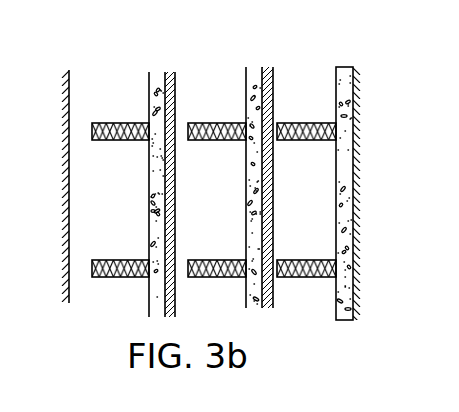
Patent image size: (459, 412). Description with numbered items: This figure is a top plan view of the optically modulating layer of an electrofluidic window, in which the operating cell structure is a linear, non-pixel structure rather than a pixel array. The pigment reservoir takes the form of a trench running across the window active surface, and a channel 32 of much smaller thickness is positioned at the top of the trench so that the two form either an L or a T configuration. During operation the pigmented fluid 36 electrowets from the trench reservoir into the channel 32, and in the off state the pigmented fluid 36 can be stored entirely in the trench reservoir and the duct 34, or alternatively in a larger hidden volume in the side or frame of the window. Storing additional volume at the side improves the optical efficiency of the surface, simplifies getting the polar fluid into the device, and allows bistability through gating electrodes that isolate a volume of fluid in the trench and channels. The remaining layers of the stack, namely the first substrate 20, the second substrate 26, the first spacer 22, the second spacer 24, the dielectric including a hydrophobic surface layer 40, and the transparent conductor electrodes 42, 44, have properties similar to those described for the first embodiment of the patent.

The first substrate 20 is at (240, 187).
The first spacer 22 is at (240, 187).
The second spacer 24 is at (162, 181).
The second substrate 26 is at (240, 187).
The channel 32 is at (240, 187).
The duct 34 is at (292, 141).
The pigmented fluid 36 is at (161, 167).
The dielectric including a hydrophobic surface layer 40 is at (240, 187).
The transparent conductor electrode 42 is at (240, 187).
The transparent conductor electrode 44 is at (240, 187).